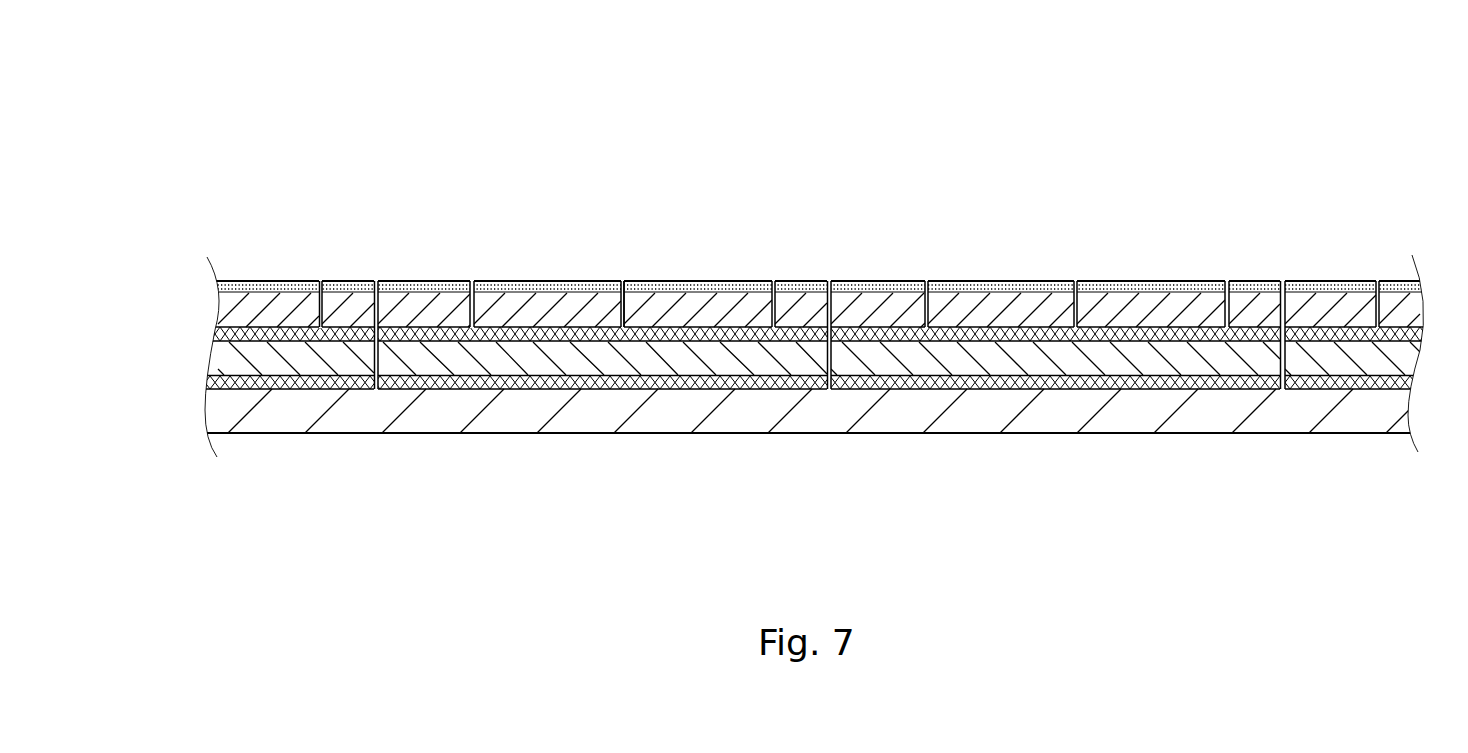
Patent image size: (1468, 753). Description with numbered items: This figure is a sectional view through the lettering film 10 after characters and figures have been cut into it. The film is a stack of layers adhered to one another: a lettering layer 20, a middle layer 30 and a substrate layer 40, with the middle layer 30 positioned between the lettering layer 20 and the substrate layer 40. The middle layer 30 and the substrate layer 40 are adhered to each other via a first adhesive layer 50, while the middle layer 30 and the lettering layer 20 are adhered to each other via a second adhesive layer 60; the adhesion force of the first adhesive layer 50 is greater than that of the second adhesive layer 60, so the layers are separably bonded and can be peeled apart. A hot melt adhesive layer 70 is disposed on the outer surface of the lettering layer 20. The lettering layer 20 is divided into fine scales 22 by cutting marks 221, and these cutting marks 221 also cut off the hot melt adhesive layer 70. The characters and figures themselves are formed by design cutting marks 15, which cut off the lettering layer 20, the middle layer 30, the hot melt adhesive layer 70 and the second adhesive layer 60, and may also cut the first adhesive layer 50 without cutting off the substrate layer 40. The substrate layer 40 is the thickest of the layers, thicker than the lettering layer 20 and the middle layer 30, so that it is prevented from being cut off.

The lettering film 10 is at (1358, 215).
The design cutting marks 15 is at (373, 318).
The lettering layer 20 is at (995, 303).
The fine scales 22 is at (722, 308).
The cutting marks 221 is at (775, 318).
The middle layer 30 is at (1190, 355).
The substrate layer 40 is at (519, 405).
The first adhesive layer 50 is at (210, 380).
The second adhesive layer 60 is at (215, 335).
The hot melt adhesive layer 70 is at (1158, 297).